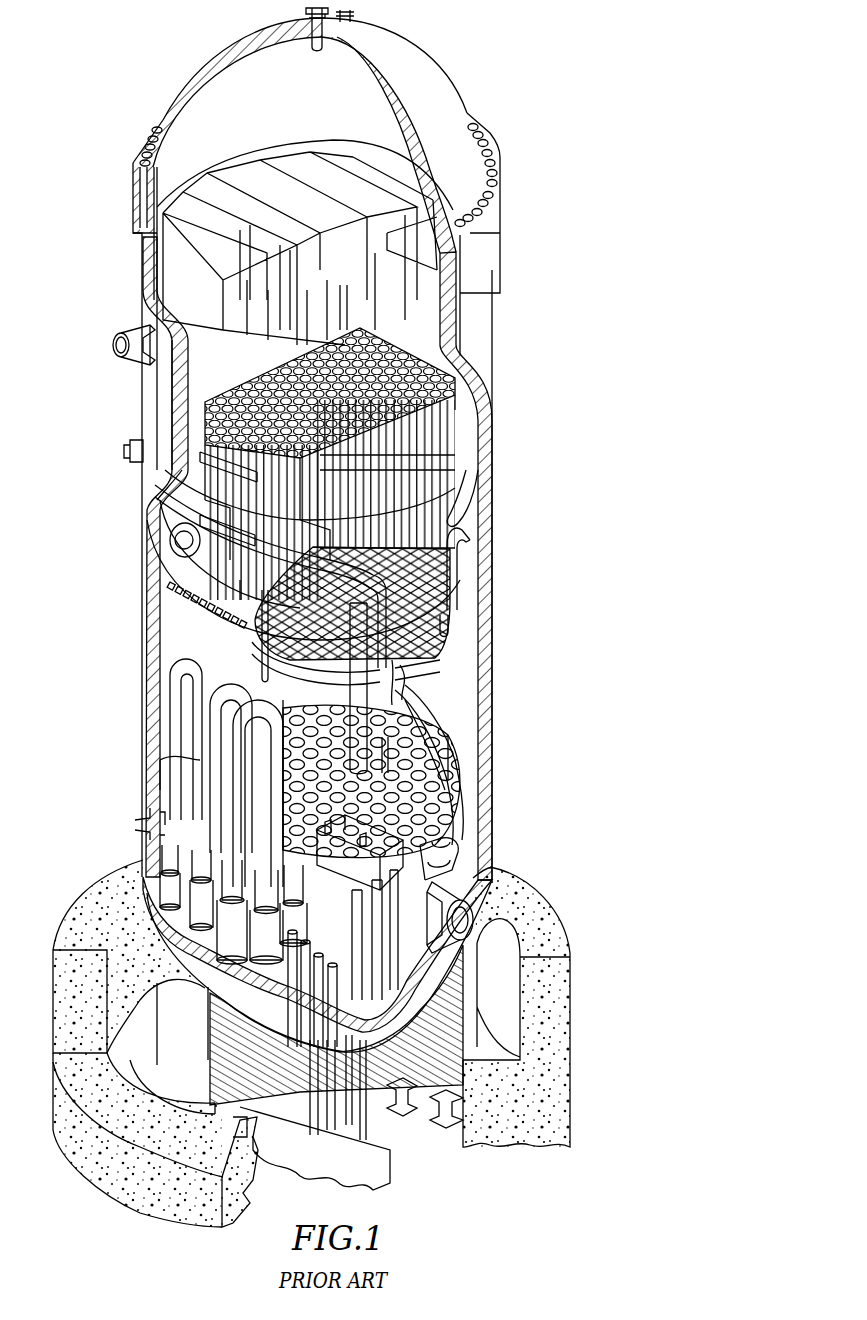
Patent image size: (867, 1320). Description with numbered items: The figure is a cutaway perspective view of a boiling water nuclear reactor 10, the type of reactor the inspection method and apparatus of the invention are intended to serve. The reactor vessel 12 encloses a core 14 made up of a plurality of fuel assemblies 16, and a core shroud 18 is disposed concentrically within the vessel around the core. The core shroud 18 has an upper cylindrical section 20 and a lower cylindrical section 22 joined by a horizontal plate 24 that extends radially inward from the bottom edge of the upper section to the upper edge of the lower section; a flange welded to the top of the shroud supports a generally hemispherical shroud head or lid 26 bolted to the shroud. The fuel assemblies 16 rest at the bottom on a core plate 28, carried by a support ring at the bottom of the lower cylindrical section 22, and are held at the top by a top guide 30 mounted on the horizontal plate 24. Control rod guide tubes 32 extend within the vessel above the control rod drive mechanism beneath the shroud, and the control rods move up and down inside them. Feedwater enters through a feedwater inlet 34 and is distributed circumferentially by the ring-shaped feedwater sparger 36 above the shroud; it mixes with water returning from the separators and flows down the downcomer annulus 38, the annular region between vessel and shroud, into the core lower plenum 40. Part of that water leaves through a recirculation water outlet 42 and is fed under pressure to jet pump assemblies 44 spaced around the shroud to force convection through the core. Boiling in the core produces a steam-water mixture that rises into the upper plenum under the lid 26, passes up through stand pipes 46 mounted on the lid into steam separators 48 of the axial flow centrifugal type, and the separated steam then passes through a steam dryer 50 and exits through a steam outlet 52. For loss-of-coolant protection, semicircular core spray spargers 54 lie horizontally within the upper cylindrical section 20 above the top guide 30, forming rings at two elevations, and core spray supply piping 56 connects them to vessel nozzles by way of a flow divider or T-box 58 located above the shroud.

The boiling water nuclear reactor 10 is at (500, 102).
The reactor vessel 12 is at (492, 578).
The core 14 is at (378, 713).
The fuel assemblies 16 is at (402, 688).
The core shroud 18 is at (455, 723).
The upper cylindrical section 20 is at (163, 622).
The lower cylindrical section 22 is at (450, 760).
The horizontal plate 24 is at (478, 634).
The shroud head or lid 26 is at (162, 566).
The core plate 28 is at (455, 812).
The top guide 30 is at (268, 698).
The control rod guide tubes 32 is at (378, 912).
The feedwater inlet 34 is at (130, 450).
The feedwater sparger 36 is at (470, 512).
The downcomer annulus 38 is at (166, 722).
The core lower plenum 40 is at (352, 897).
The recirculation water outlet 42 is at (492, 865).
The jet pump assemblies 44 is at (166, 760).
The stand pipes 46 is at (430, 475).
The steam separators 48 is at (450, 420).
The steam dryer 50 is at (185, 274).
The steam outlet 52 is at (126, 352).
The core spray spargers 54 is at (262, 668).
The core spray supply piping 56 is at (160, 503).
The T-box 58 is at (168, 542).